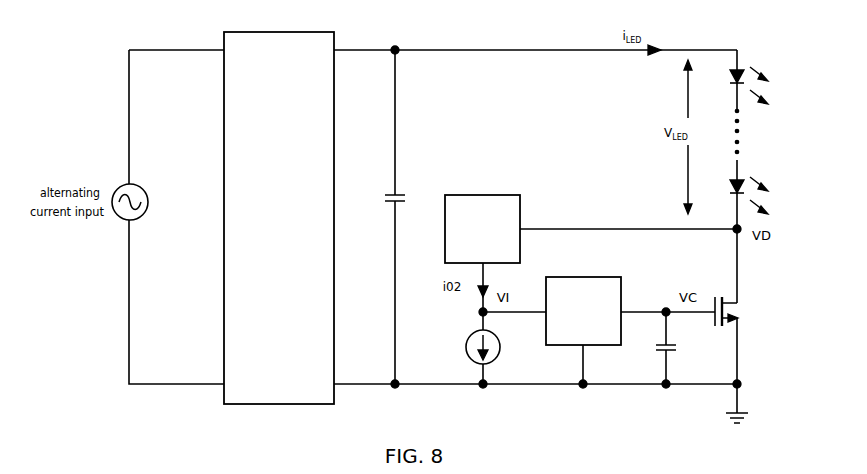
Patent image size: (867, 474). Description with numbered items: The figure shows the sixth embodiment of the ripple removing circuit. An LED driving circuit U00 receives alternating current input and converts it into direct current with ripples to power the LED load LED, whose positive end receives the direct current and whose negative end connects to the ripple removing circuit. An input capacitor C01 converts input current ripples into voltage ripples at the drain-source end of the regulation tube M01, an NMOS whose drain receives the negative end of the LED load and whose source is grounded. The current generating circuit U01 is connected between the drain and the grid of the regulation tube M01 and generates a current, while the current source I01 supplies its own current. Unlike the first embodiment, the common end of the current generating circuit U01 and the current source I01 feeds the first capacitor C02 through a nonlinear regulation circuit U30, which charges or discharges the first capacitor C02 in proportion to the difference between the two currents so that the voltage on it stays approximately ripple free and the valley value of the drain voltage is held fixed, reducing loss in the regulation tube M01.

The LED driving circuit U00 is at (279, 207).
The input capacitor C01 is at (407, 219).
The current generating circuit U01 is at (591, 218).
The nonlinear regulation circuit U30 is at (599, 322).
The current source I01 is at (471, 350).
The first capacitor C02 is at (682, 350).
The regulation tube M01 is at (747, 342).
The LED load LED is at (762, 139).